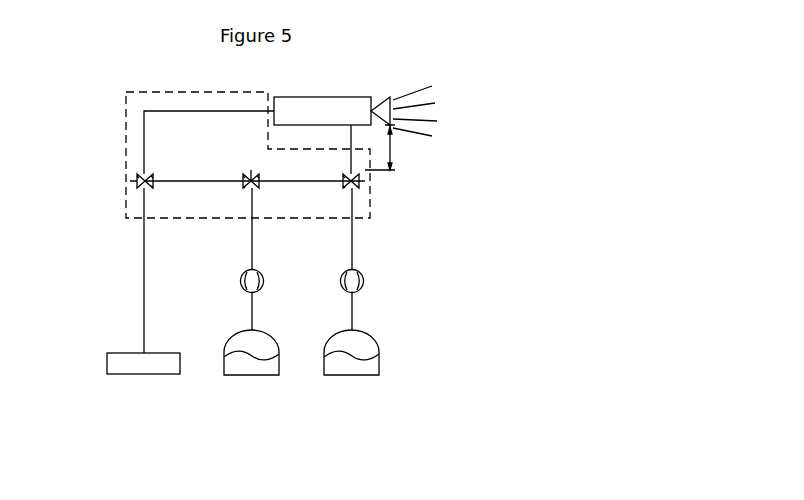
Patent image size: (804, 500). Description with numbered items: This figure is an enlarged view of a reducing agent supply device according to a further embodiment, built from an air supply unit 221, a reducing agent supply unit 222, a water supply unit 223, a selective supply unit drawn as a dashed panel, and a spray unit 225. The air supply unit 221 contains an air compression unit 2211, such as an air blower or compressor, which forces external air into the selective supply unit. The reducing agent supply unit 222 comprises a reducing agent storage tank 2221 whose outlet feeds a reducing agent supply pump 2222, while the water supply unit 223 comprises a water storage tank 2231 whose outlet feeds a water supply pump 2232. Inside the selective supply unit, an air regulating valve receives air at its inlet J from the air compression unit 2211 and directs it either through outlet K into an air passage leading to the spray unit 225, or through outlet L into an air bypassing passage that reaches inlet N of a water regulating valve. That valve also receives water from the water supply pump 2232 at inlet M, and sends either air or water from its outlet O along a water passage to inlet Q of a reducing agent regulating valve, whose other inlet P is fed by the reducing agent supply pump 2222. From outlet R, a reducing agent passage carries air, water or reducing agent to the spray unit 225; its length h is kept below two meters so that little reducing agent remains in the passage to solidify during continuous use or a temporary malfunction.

The spray unit 225 is at (295, 103).
The length of the reducing agent passage h is at (393, 166).
The outlet of the air regulating valve K is at (139, 176).
The other outlet of the air regulating valve L is at (152, 176).
The inlet of the air regulating valve J is at (151, 186).
The inlet of the water regulating valve N is at (243, 176).
The outlet of the water regulating valve O is at (258, 176).
The inlet of the water regulating valve M is at (244, 186).
The inlet of the reducing agent regulating valve Q is at (343, 176).
The inlet of the reducing agent regulating valve P is at (344, 187).
The outlet of the reducing agent regulating valve R is at (358, 187).
The air supply unit 221 is at (102, 318).
The air compression unit 2211 is at (107, 363).
The water supply unit 223 is at (222, 335).
The water supply pump 2232 is at (240, 281).
The water storage tank 2231 is at (229, 370).
The reducing agent supply unit 222 is at (370, 323).
The reducing agent supply pump 2222 is at (364, 281).
The reducing agent storage tank 2221 is at (329, 370).